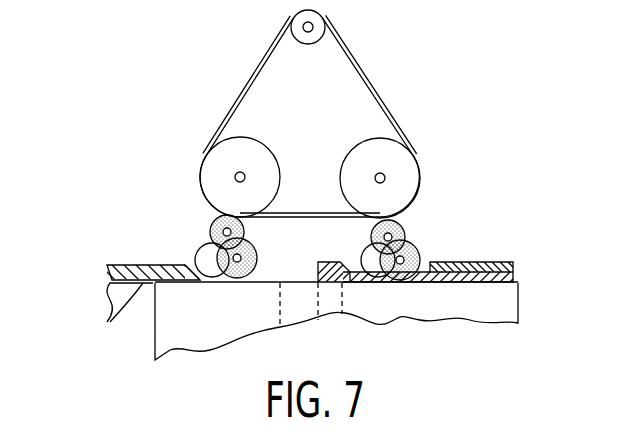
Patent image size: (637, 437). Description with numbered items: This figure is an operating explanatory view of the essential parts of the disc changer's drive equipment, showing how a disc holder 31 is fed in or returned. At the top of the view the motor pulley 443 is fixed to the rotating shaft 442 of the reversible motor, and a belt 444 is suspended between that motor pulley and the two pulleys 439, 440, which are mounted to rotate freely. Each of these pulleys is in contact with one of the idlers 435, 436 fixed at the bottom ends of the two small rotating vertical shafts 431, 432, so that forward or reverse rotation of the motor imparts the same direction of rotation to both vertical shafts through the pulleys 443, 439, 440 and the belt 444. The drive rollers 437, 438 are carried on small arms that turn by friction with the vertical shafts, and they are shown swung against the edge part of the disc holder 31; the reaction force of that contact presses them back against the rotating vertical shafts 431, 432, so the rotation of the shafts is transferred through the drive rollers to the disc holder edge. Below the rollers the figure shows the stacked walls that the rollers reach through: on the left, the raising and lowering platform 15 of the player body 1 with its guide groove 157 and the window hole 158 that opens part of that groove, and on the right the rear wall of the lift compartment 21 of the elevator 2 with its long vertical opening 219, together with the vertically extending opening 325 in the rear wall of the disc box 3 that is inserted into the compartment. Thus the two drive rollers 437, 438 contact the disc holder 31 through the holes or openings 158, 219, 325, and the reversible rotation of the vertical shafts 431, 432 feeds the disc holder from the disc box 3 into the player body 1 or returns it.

The player body 1 is at (107, 268).
The elevator 2 is at (509, 263).
The disc box 3 is at (518, 279).
The raising and lowering platform 15 is at (106, 304).
The compartment 21 is at (520, 268).
The disc holder 31 is at (153, 335).
The disc holder guide groove 157 is at (112, 320).
The window hole 158 is at (198, 272).
The vertical opening 219 is at (432, 262).
The vertically extending opening 325 is at (352, 262).
The rotating vertical shaft 431 is at (215, 222).
The rotating vertical shaft 432 is at (406, 224).
The idler 435 is at (214, 232).
The idler 436 is at (414, 246).
The drive roller 437 is at (208, 252).
The drive roller 438 is at (415, 236).
The pulley 439 is at (205, 162).
The pulley 440 is at (422, 168).
The rotating shaft 442 is at (292, 28).
The motor pulley 443 is at (322, 24).
The belt 444 is at (372, 85).